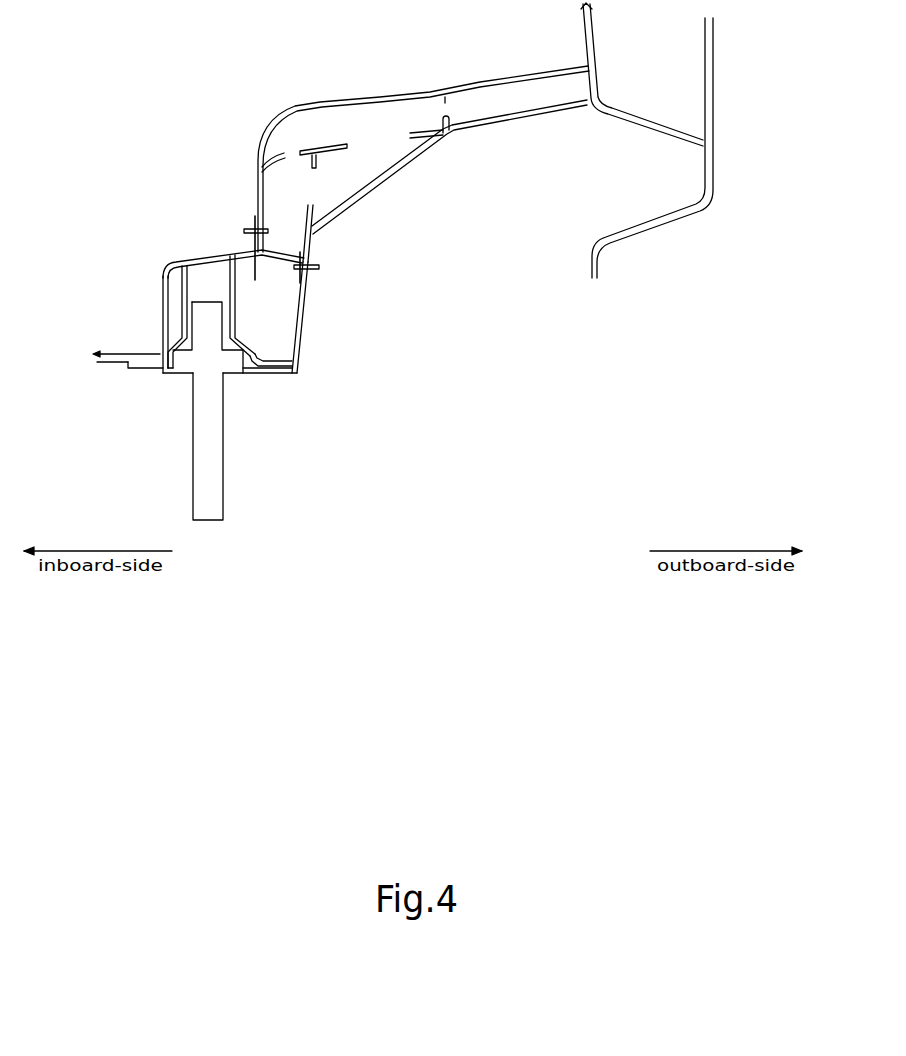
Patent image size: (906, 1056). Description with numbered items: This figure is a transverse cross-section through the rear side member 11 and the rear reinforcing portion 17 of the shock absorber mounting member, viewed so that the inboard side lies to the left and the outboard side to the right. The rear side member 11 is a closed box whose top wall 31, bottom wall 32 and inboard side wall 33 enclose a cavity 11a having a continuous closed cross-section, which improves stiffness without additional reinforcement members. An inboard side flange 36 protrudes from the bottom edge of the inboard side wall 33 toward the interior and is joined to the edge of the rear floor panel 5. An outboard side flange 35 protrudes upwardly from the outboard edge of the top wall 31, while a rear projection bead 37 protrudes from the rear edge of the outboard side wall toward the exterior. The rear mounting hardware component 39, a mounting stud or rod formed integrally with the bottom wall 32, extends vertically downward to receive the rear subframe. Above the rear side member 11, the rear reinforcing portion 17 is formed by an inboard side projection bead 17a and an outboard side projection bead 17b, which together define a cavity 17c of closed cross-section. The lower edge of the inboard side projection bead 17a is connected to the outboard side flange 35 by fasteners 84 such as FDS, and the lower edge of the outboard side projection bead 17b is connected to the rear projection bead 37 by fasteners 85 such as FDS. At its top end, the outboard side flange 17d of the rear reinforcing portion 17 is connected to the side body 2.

The side body 2 is at (714, 74).
The rear floor panel 5 is at (127, 352).
The rear side member 11 is at (277, 381).
The cavity 11a is at (244, 320).
The rear reinforcing portion 17 is at (480, 132).
The inboard side projection bead 17a is at (275, 125).
The outboard side projection bead 17b is at (367, 196).
The cavity 17c is at (395, 155).
The outboard side flange 17d is at (580, 30).
The top wall 31 is at (193, 263).
The bottom wall 32 is at (182, 376).
The inboard side wall 33 is at (161, 288).
The outboard side flange 35 is at (253, 223).
The inboard side flange 36 is at (142, 372).
The rear projection bead 37 is at (299, 323).
The rear mounting hardware component 39 is at (210, 453).
The fasteners 84 is at (243, 231).
The fasteners 85 is at (320, 268).